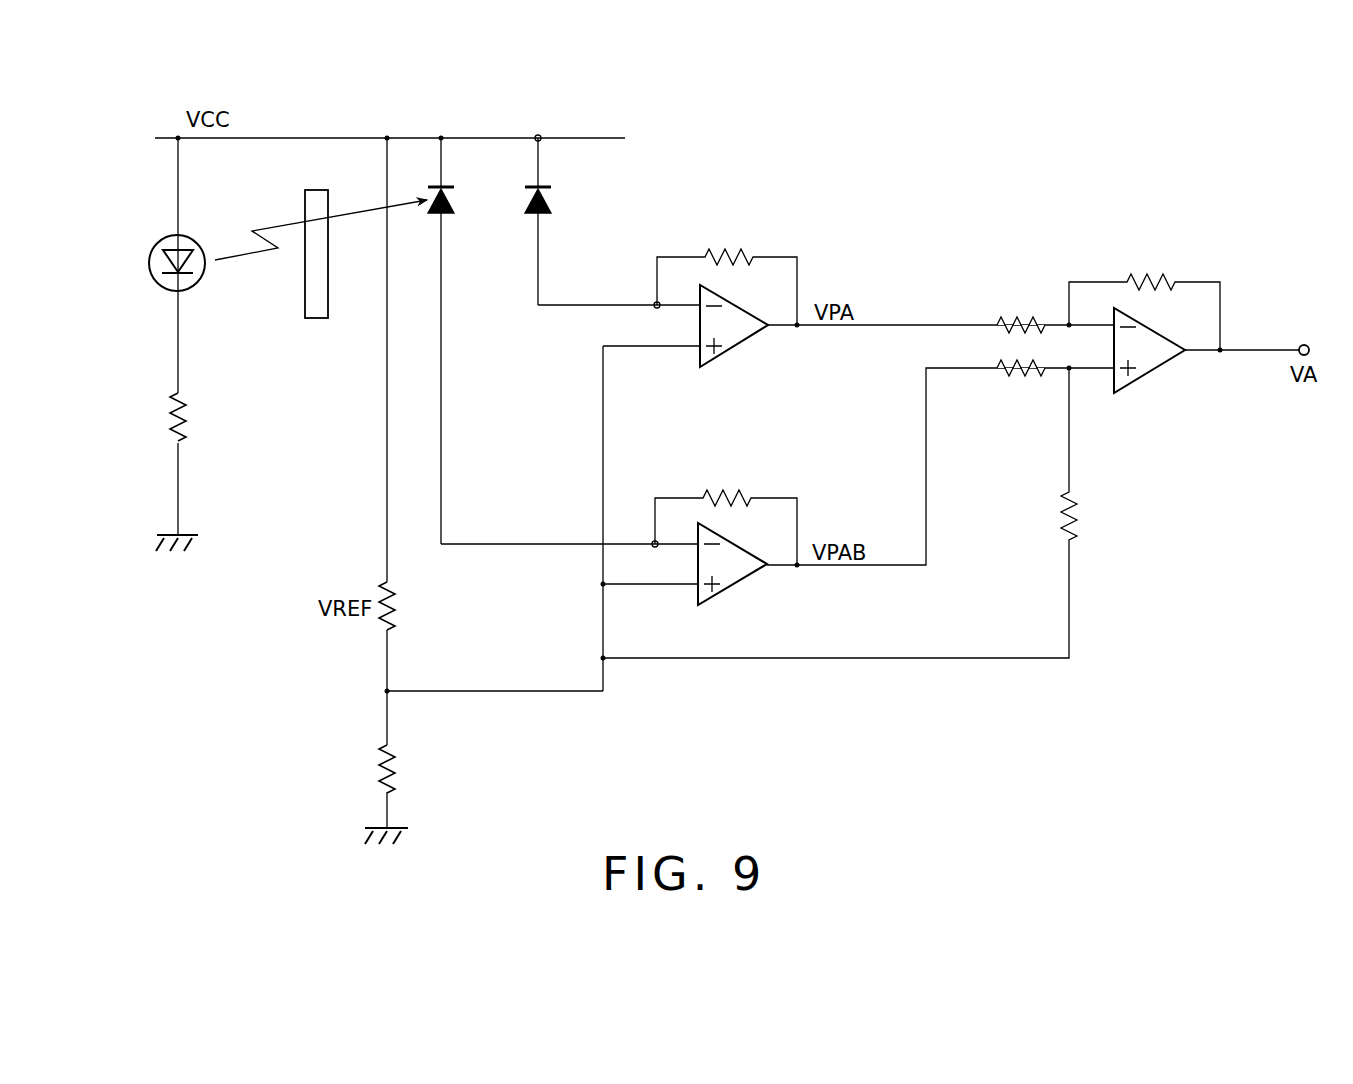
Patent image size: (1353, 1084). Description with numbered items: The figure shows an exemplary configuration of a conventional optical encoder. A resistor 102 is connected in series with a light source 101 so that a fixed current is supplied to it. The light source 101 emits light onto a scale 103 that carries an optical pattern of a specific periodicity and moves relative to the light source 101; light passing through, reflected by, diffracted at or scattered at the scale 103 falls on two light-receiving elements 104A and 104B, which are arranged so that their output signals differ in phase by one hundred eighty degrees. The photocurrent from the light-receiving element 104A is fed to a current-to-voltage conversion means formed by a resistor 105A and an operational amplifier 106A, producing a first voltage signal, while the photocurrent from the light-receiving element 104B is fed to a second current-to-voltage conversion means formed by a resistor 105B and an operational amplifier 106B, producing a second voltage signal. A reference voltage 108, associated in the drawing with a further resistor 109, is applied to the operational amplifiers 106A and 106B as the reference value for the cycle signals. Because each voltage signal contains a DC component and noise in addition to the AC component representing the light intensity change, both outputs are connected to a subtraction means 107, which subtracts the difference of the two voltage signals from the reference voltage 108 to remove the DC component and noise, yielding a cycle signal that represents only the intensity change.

The light source 101 is at (148, 232).
The resistor 102 is at (154, 421).
The scale 103 is at (312, 330).
The light-receiving element 104A is at (567, 199).
The light-receiving element 104B is at (458, 167).
The resistor 105A is at (735, 229).
The resistor 105B is at (738, 477).
The operational amplifier 106A is at (758, 349).
The operational amplifier 106B is at (760, 587).
The subtraction means 107 is at (1166, 373).
The reference voltage VREF 108 is at (400, 612).
The resistor 109 is at (400, 772).